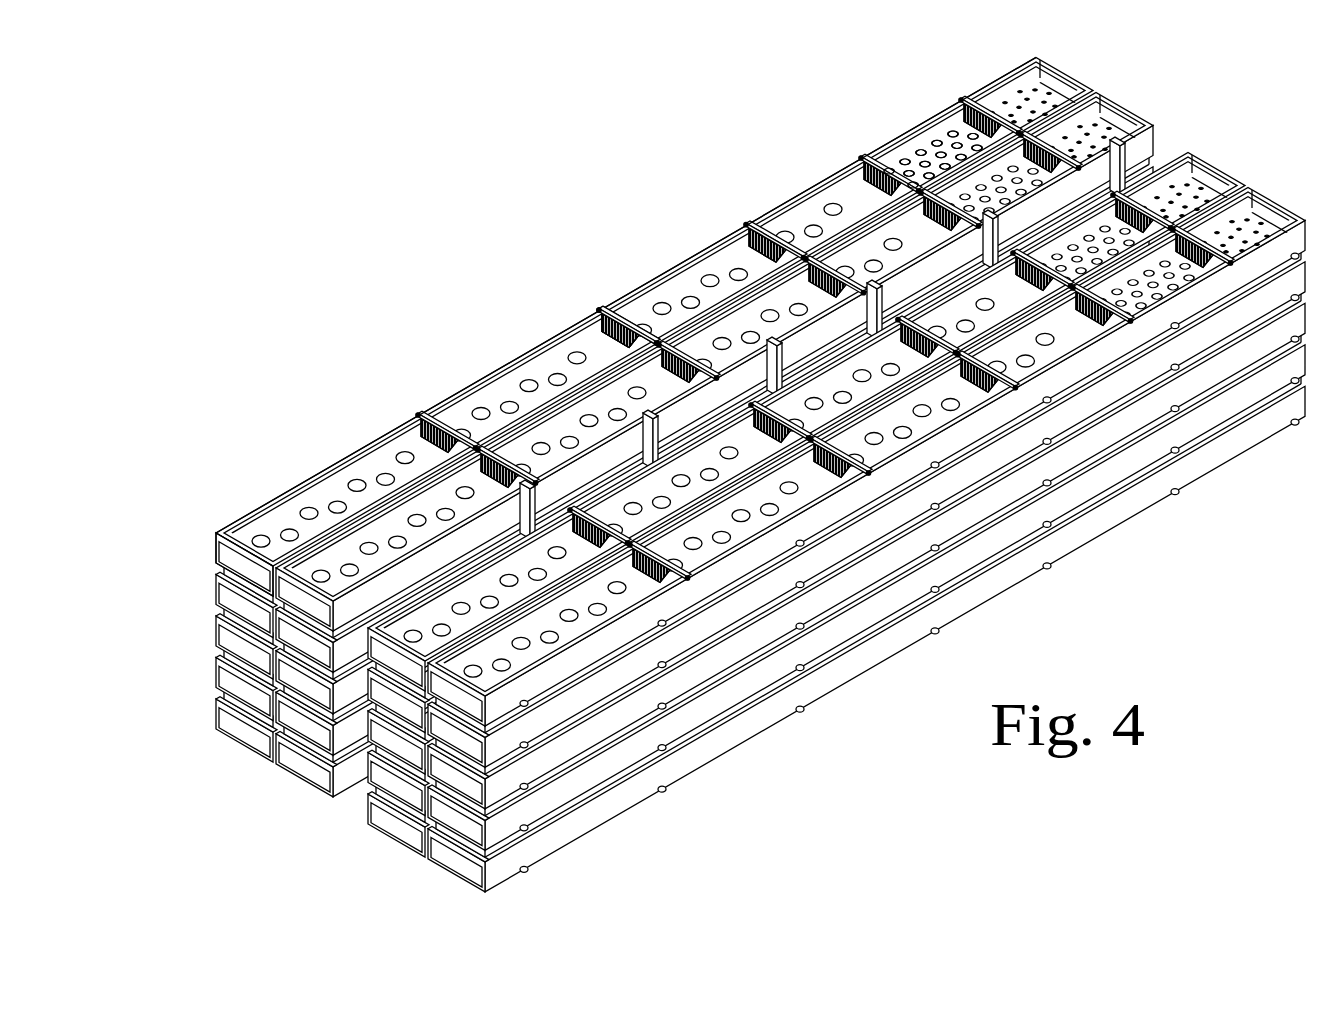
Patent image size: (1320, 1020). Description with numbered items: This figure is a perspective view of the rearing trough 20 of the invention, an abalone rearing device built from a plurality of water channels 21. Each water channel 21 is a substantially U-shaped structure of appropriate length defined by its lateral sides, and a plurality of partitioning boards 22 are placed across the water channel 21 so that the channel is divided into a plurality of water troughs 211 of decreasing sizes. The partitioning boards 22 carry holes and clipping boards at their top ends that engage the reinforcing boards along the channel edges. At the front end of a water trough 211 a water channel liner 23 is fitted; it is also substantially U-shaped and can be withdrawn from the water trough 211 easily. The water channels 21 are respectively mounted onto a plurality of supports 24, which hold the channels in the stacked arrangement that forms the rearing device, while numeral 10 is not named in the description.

The rearing trough 20 is at (725, 469).
The tray 10 is at (480, 412).
The water channel 21 is at (768, 200).
The water trough 211 is at (943, 130).
The partitioning board 22 is at (618, 310).
The water channel liner 23 is at (237, 548).
The support 24 is at (1113, 148).